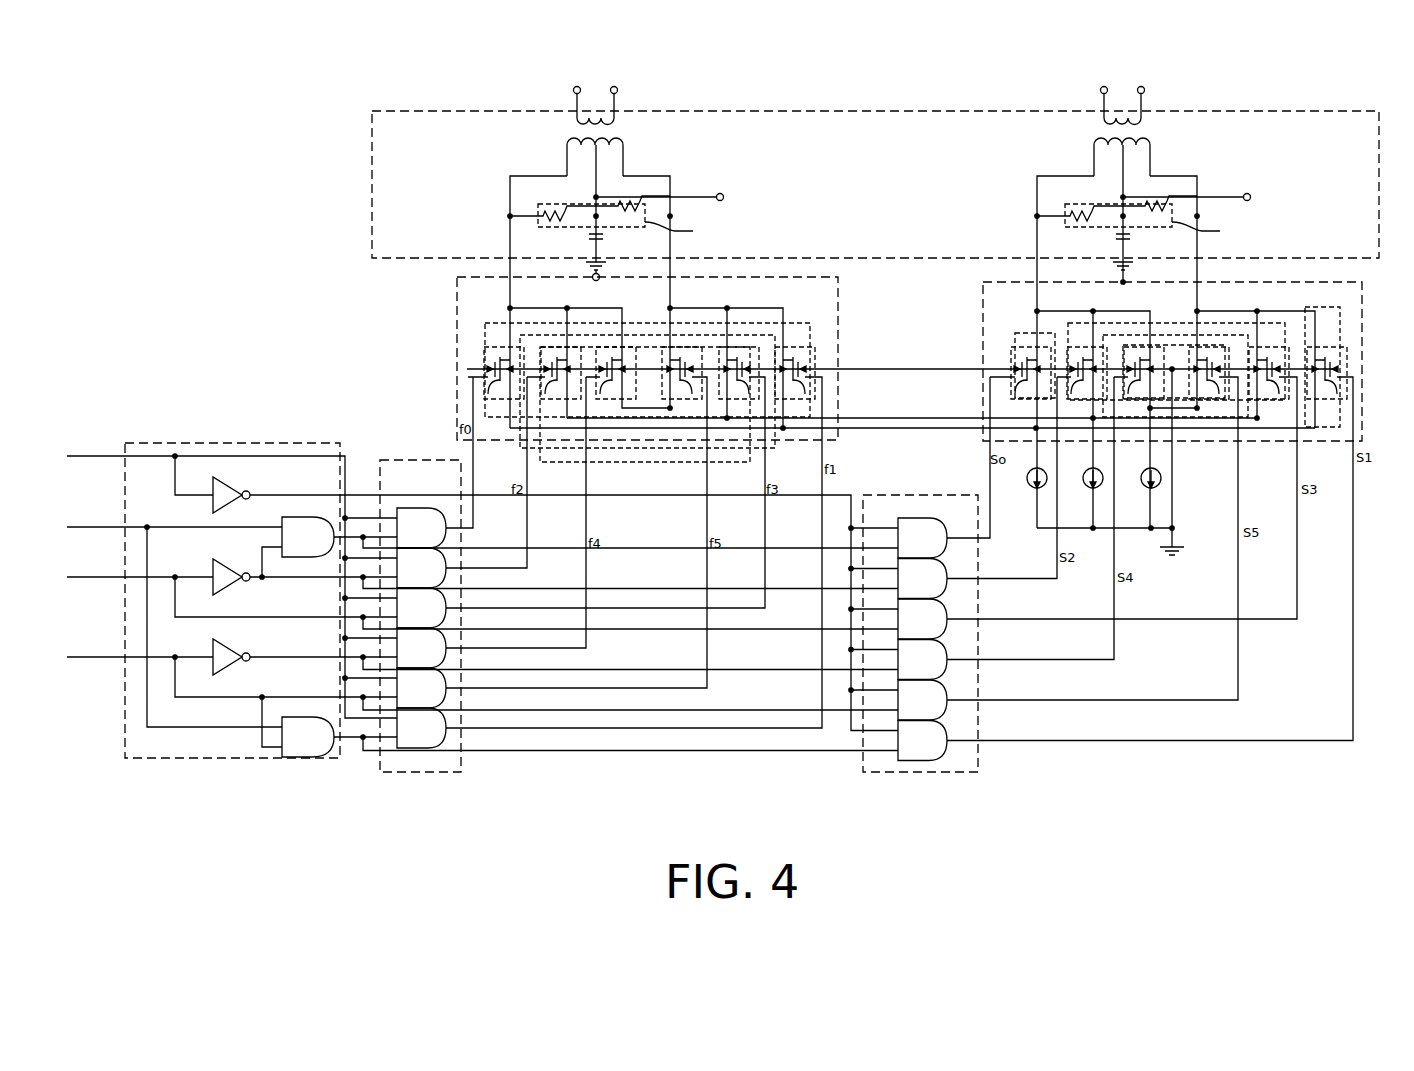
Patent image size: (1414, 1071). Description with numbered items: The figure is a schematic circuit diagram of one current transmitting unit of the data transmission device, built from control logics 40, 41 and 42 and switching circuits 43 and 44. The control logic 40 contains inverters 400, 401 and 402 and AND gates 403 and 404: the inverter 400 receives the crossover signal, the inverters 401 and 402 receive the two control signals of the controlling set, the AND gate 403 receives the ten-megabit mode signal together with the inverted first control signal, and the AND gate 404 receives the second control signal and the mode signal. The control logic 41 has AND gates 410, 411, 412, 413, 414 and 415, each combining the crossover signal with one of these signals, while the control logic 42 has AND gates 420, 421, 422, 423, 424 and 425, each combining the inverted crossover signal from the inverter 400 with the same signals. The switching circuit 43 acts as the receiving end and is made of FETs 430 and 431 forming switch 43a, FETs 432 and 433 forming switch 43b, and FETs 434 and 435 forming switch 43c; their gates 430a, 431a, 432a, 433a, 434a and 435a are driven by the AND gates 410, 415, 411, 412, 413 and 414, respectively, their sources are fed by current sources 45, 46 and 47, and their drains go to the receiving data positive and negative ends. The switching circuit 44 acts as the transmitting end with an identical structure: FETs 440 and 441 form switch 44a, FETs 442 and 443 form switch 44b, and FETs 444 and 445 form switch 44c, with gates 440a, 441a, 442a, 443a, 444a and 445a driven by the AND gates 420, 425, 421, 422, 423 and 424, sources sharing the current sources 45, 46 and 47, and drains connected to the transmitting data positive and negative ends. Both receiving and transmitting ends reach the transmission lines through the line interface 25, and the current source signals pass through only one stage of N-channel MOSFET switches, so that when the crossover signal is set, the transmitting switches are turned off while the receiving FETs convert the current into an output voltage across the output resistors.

The line interface 25 is at (1290, 111).
The control logic 40 is at (240, 443).
The control logic 41 is at (417, 772).
The control logic 42 is at (917, 772).
The switching circuit 43 is at (457, 354).
The switch 43a is at (789, 323).
The switch 43b is at (554, 462).
The switch 43c is at (642, 336).
The switching circuit 44 is at (1362, 355).
The switch 44a is at (1018, 333).
The switch 44b is at (1265, 322).
The switch 44c is at (1167, 336).
The current source 45 is at (1042, 470).
The current source 46 is at (1098, 470).
The current source 47 is at (1156, 470).
The inverter 400 is at (225, 473).
The inverter 401 is at (225, 559).
The inverter 402 is at (228, 675).
The AND gate 403 is at (290, 517).
The AND gate 404 is at (290, 717).
The AND gate 410 is at (448, 541).
The AND gate 411 is at (448, 581).
The AND gate 412 is at (448, 621).
The AND gate 413 is at (448, 661).
The AND gate 414 is at (448, 701).
The AND gate 415 is at (448, 741).
The AND gate 420 is at (949, 552).
The AND gate 421 is at (949, 592).
The AND gate 422 is at (949, 633).
The AND gate 423 is at (949, 674).
The AND gate 424 is at (949, 714).
The AND gate 425 is at (949, 754).
The FET 430 is at (504, 372).
The FET 431 is at (795, 372).
The FET 432 is at (561, 372).
The FET 433 is at (739, 372).
The FET 434 is at (616, 372).
The FET 435 is at (682, 372).
The gate 430a is at (491, 389).
The gate 431a is at (796, 389).
The gate 432a is at (548, 389).
The gate 433a is at (740, 389).
The gate 434a is at (603, 389).
The gate 435a is at (683, 389).
The FET 440 is at (1031, 372).
The FET 441 is at (1327, 372).
The FET 442 is at (1087, 372).
The FET 443 is at (1269, 372).
The FET 444 is at (1144, 372).
The FET 445 is at (1209, 372).
The gate 440a is at (1018, 389).
The gate 441a is at (1328, 389).
The gate 442a is at (1074, 389).
The gate 443a is at (1270, 389).
The gate 444a is at (1131, 389).
The gate 445a is at (1210, 389).